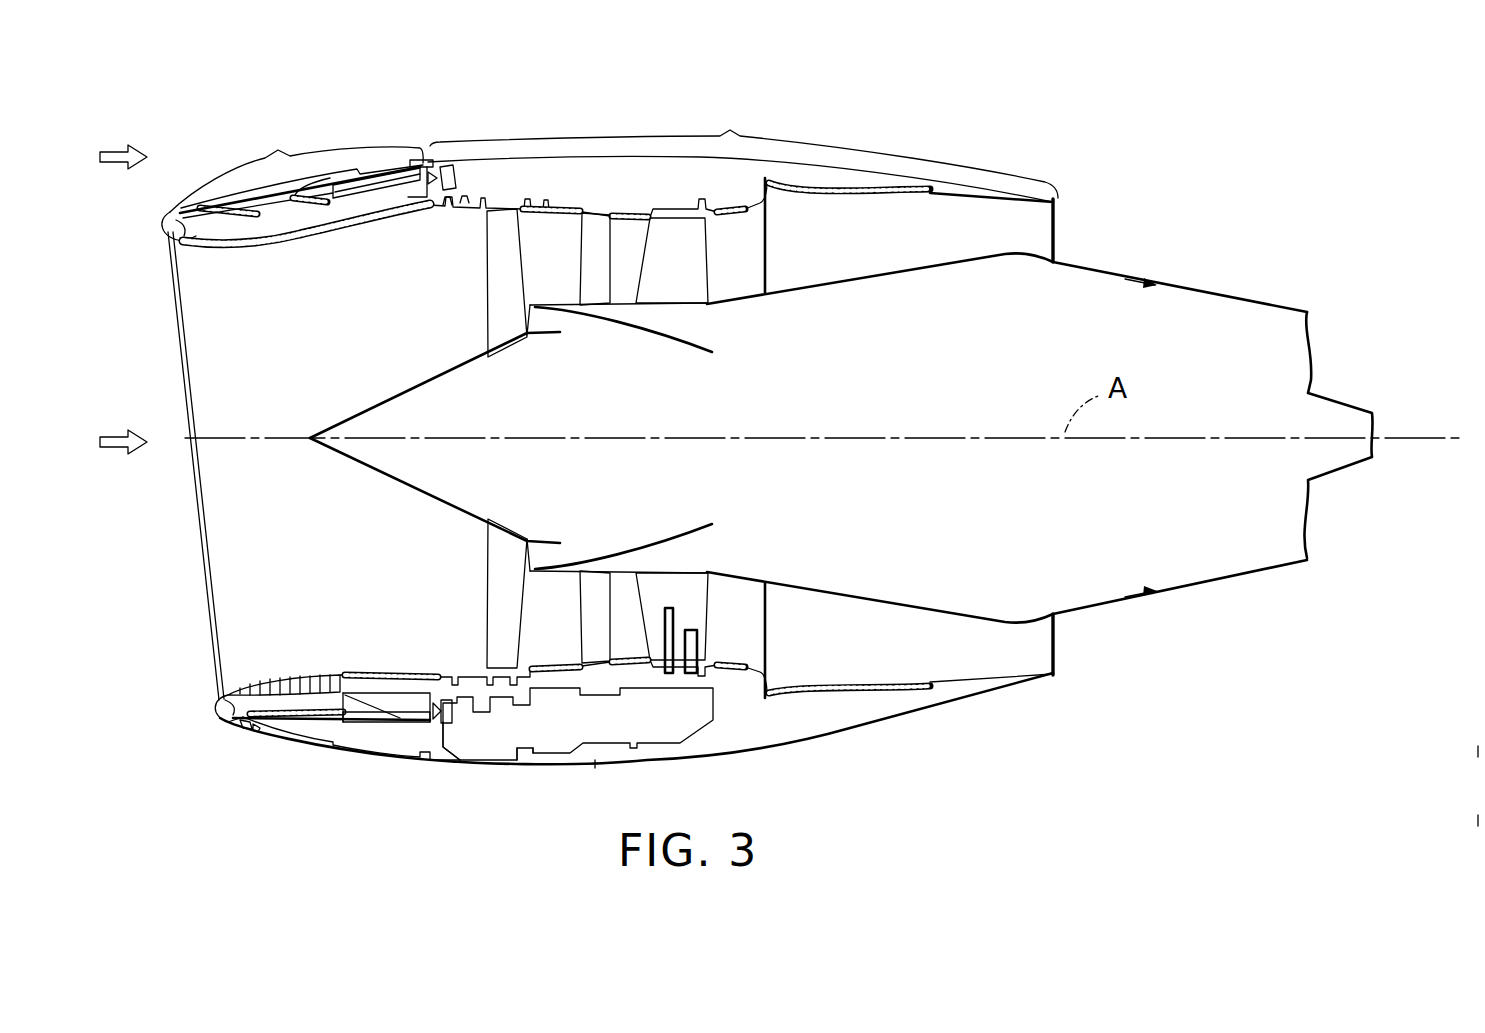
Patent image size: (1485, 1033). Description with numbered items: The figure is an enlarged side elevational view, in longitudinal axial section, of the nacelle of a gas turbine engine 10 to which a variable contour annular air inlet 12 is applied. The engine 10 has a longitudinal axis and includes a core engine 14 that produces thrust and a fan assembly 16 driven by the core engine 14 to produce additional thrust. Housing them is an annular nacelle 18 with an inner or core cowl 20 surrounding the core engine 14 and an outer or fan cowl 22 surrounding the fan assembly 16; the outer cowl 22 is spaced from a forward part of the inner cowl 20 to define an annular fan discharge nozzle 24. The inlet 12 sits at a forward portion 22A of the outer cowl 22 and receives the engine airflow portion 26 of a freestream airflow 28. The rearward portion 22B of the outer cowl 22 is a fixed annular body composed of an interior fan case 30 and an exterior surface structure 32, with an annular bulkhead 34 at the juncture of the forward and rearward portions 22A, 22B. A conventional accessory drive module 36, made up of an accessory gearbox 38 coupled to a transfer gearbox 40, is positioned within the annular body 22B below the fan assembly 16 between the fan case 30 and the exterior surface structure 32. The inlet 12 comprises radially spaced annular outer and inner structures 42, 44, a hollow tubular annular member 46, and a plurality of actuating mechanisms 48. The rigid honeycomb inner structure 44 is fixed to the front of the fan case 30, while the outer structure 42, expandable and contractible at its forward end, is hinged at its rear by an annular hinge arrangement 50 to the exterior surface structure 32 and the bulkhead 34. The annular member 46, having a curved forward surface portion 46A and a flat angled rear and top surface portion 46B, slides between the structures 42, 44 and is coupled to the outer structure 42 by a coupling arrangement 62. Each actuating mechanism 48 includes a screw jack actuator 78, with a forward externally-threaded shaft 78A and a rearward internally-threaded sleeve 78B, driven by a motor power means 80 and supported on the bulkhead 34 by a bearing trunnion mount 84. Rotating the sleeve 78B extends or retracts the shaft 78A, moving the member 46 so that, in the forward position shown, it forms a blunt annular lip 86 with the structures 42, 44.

The gas turbine engine 10 is at (1105, 152).
The variable contour annular air inlet 12 is at (222, 254).
The core engine 14 is at (978, 427).
The fan assembly 16 is at (478, 536).
The annular nacelle 18 is at (1100, 606).
The inner cowl 20 is at (1088, 262).
The outer cowl 22 is at (538, 128).
The forward portion of the outer cowl 22A is at (296, 168).
The rearward portion of the outer cowl 22B is at (743, 152).
The annular fan discharge nozzle 24 is at (1058, 218).
The engine airflow portion 26 is at (125, 435).
The freestream airflow 28 is at (125, 150).
The annular interior fan case 30 is at (560, 668).
The annular exterior surface structure 32 is at (640, 762).
The annular bulkhead 34 is at (388, 708).
The accessory drive module 36 is at (594, 766).
The accessory gearbox 38 is at (522, 758).
The transfer gearbox 40 is at (690, 700).
The annular outer structure 42 is at (345, 752).
The annular inner structure 44 is at (250, 250).
The annular member 46 is at (214, 713).
The annular forward surface portion 46A is at (176, 228).
The annular rear and top surface portion 46B is at (182, 242).
The actuating mechanisms 48 is at (335, 225).
The annular hinge arrangement 50 is at (430, 163).
The coupling arrangement 62 is at (240, 736).
The actuator 78 is at (340, 215).
The forward externally-threaded shaft 78A is at (290, 245).
The rearward internally-threaded sleeve 78B is at (400, 200).
The power means 80 is at (456, 178).
The bearing trunnion mount 84 is at (440, 210).
The annular lip 86 is at (166, 216).